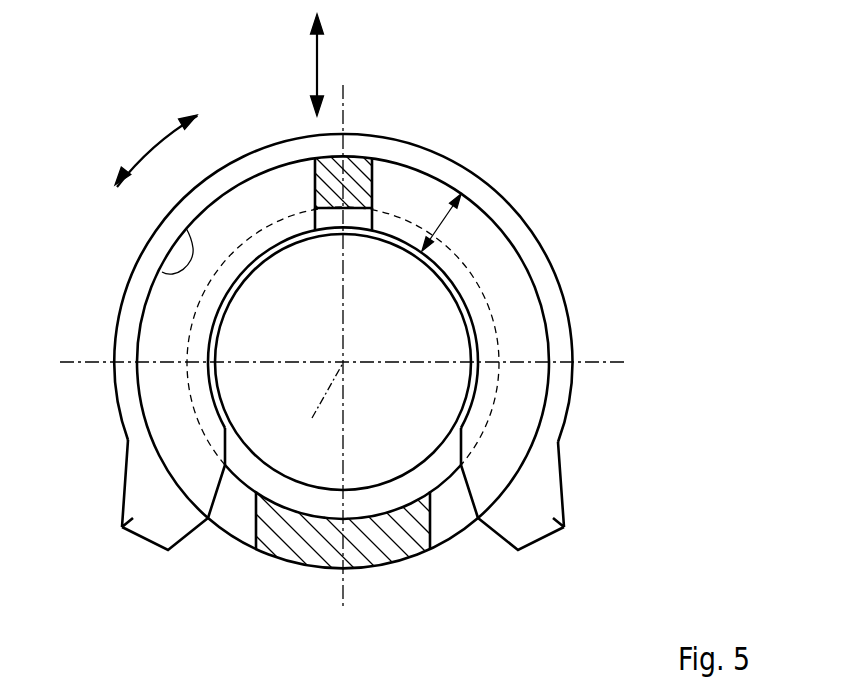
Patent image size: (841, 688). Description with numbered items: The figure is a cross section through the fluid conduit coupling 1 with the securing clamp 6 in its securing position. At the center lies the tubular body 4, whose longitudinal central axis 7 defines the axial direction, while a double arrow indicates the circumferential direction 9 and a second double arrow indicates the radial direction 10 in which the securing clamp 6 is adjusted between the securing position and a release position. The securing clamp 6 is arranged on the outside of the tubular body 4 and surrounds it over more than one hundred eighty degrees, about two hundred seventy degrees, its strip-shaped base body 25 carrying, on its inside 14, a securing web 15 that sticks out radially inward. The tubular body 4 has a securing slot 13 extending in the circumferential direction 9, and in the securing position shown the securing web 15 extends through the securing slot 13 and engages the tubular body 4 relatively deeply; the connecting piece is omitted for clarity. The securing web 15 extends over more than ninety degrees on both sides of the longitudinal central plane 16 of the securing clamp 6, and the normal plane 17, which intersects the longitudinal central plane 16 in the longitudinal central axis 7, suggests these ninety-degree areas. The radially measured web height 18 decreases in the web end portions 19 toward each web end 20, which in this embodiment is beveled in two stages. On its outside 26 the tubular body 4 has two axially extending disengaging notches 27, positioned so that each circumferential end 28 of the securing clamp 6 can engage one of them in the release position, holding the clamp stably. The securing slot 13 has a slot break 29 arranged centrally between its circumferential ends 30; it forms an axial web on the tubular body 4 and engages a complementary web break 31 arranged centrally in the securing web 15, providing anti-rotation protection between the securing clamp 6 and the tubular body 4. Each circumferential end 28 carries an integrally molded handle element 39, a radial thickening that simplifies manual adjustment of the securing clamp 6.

The fluid conduit coupling 1 is at (621, 191).
The tubular body 4 is at (308, 570).
The securing clamp 6 is at (455, 158).
The longitudinal central axis 7 is at (312, 418).
The circumferential direction 9 is at (153, 147).
The radial direction 10 is at (316, 64).
The securing slot 13 is at (447, 503).
The inside 14 is at (162, 272).
The securing web 15 is at (464, 413).
The longitudinal central plane 16 is at (346, 93).
The normal plane 17 is at (615, 360).
The web height 18 is at (445, 221).
The web end portions 19 is at (463, 297).
The web end 20 is at (215, 512).
The base body 25 is at (262, 157).
The outside 26 is at (543, 270).
The disengaging notches 27 is at (192, 478).
The circumferential end 28 is at (191, 534).
The slot break 29 is at (353, 197).
The circumferential ends 30 is at (256, 521).
The web break 31 is at (314, 220).
The handle element 39 is at (122, 527).